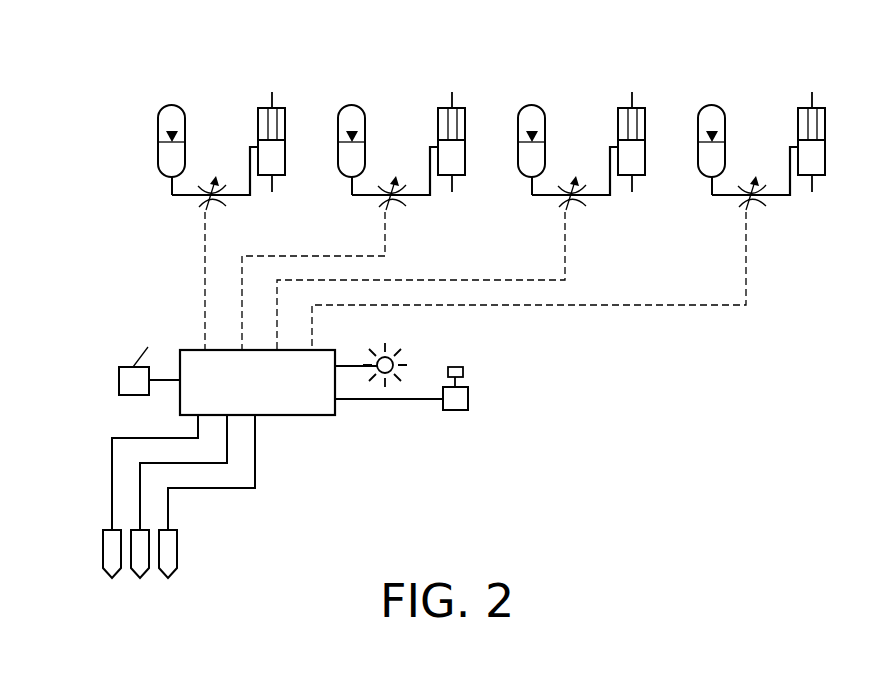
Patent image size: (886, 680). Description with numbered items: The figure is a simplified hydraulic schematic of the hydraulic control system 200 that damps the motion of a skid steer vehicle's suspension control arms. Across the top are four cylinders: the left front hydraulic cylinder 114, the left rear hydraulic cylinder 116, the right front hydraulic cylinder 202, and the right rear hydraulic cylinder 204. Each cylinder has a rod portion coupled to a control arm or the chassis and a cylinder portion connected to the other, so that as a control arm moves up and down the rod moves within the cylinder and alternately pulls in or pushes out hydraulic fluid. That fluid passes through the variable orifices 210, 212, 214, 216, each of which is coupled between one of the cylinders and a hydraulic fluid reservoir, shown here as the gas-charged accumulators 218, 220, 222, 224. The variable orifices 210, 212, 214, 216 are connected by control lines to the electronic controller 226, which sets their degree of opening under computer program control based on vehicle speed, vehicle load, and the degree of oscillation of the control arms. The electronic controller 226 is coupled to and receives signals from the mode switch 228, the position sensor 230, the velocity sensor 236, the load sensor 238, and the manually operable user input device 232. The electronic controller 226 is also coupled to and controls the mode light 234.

The hydraulic control system 200 is at (500, 433).
The left front hydraulic cylinder 114 is at (287, 112).
The left rear hydraulic cylinder 116 is at (458, 107).
The right front hydraulic cylinder 202 is at (645, 108).
The right rear hydraulic cylinder 204 is at (823, 108).
The variable orifice 210 is at (218, 206).
The variable orifice 212 is at (398, 206).
The variable orifice 214 is at (578, 206).
The variable orifice 216 is at (757, 206).
The gas-charged accumulator 218 is at (172, 104).
The gas-charged accumulator 220 is at (352, 104).
The gas-charged accumulator 222 is at (532, 104).
The gas-charged accumulator 224 is at (713, 104).
The electronic controller 226 is at (299, 416).
The mode switch 228 is at (119, 385).
The position sensor 230 is at (103, 548).
The manually operable user input device 232 is at (468, 398).
The mode light 234 is at (400, 353).
The velocity sensor 236 is at (135, 578).
The load sensor 238 is at (177, 548).